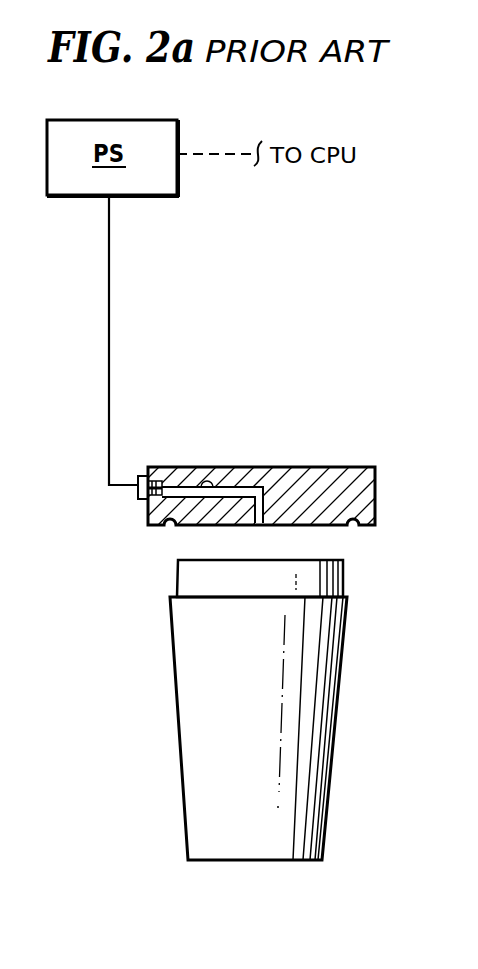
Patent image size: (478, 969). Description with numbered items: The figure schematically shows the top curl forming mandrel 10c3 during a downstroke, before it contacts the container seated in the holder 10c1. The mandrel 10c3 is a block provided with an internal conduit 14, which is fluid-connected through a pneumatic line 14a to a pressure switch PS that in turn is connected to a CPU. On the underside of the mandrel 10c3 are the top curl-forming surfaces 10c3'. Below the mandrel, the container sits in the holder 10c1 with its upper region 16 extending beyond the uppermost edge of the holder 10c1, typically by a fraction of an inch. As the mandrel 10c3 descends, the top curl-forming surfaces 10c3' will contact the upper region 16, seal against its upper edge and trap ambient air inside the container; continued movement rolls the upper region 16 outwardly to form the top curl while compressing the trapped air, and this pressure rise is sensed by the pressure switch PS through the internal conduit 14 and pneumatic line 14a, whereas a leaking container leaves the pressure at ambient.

The pneumatic line 14a is at (112, 291).
The internal conduit 14 is at (226, 472).
The top curl forming mandrel 10c3 is at (289, 472).
The top curl-forming surfaces 10c3' is at (290, 536).
The upper region of the container 16 is at (269, 593).
The holder 10c1 is at (260, 710).